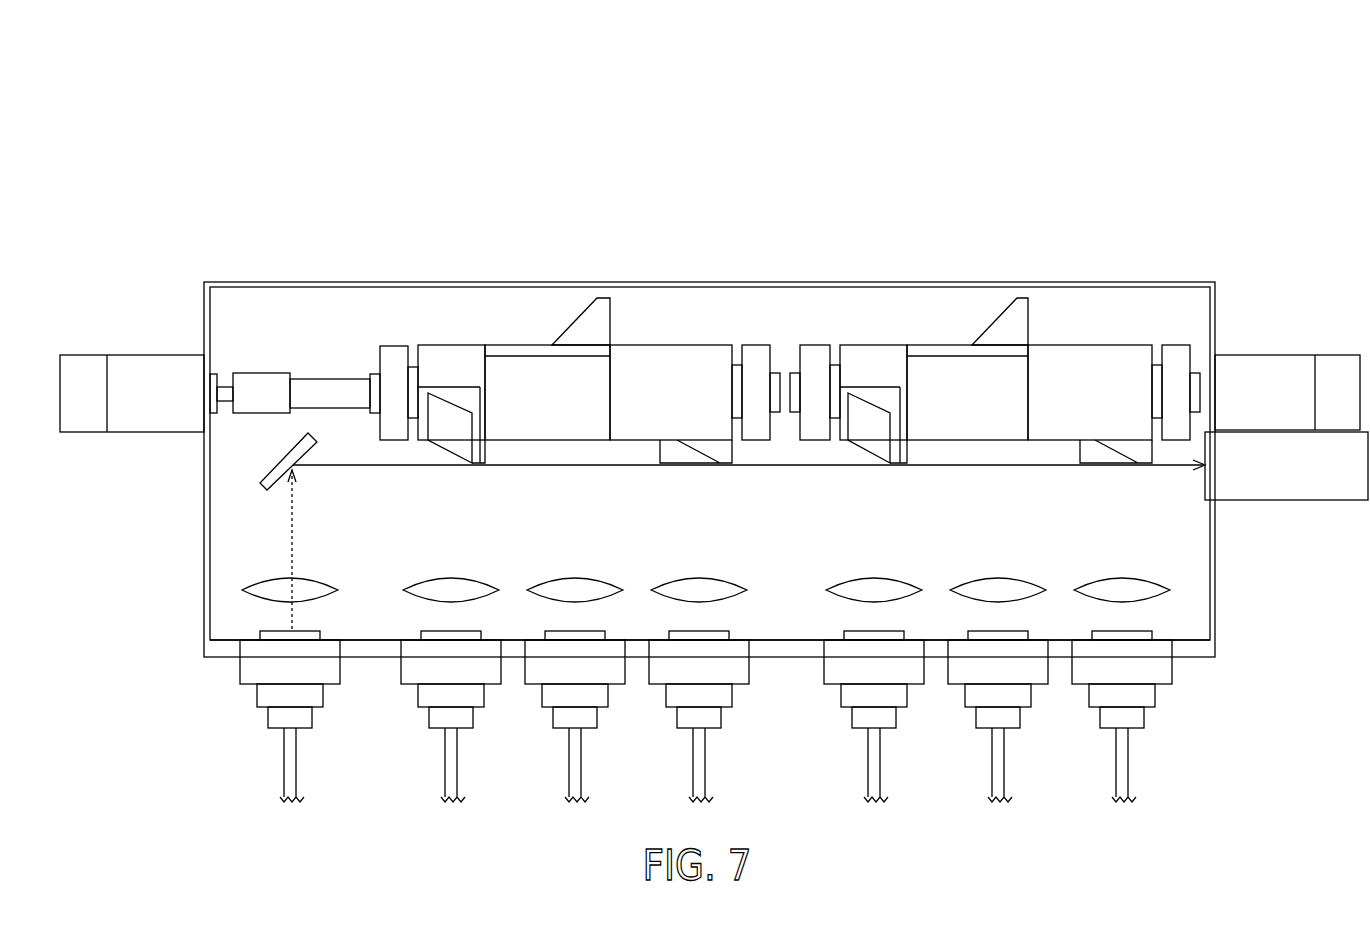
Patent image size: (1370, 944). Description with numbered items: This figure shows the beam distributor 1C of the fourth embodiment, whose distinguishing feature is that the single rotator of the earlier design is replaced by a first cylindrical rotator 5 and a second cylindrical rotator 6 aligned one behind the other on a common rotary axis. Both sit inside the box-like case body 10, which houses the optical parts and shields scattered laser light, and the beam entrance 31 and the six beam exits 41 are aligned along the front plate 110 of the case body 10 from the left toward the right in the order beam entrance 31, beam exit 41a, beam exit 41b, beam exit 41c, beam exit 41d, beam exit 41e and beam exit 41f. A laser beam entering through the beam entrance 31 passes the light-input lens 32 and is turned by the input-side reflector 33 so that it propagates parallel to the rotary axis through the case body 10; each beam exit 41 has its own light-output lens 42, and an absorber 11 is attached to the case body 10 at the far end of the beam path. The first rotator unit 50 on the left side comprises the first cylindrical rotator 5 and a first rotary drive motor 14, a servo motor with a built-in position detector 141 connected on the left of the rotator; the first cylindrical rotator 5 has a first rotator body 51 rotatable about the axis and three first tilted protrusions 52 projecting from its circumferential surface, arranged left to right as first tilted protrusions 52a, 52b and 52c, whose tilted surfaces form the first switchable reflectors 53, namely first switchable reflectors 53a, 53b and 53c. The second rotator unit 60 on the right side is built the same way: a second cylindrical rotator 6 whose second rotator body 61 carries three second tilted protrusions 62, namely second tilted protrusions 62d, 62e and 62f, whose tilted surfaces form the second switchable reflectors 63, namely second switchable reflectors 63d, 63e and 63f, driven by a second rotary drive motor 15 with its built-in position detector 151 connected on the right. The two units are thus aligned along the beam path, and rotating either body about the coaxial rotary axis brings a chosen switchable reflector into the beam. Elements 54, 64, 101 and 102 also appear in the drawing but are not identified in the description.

The beam distributor 1C is at (1275, 173).
The case body 10 is at (1217, 610).
The front plate 110 is at (1183, 658).
The absorber 11 is at (1295, 487).
The first rotary drive motor 14 is at (155, 368).
The position detector 141 is at (80, 368).
The second rotary drive motor 15 is at (1272, 368).
The position detector 151 is at (1330, 368).
The beam entrance 31 is at (262, 690).
The light-input lens 32 is at (270, 583).
The input-side reflector 33 is at (275, 465).
The beam exit 41 is at (764, 705).
The beam exit 41a is at (427, 705).
The beam exit 41b is at (551, 705).
The beam exit 41c is at (675, 705).
The beam exit 41d is at (850, 705).
The beam exit 41e is at (974, 705).
The beam exit 41f is at (1098, 705).
The light-output lens 42 is at (419, 592).
The first cylindrical rotator 5 is at (570, 314).
The first rotator unit 50 is at (549, 314).
The first rotator body 51 is at (521, 365).
The first tilted protrusions 52 is at (583, 333).
The first tilted protrusion 52a is at (480, 417).
The first tilted protrusion 52b is at (602, 298).
The first tilted protrusion 52c is at (722, 468).
The first switchable reflectors 53 is at (545, 309).
The first switchable reflector 53a is at (448, 415).
The first switchable reflector 53b is at (572, 325).
The first switchable reflector 53c is at (680, 450).
The first support plate 54 is at (395, 345).
The second cylindrical rotator 6 is at (994, 314).
The second rotator unit 60 is at (1019, 314).
The second rotator body 61 is at (943, 365).
The second tilted protrusions 62 is at (1004, 334).
The second tilted protrusion 62d is at (898, 418).
The second tilted protrusion 62e is at (1022, 298).
The second tilted protrusion 62f is at (1140, 468).
The second switchable reflectors 63 is at (968, 309).
The second switchable reflector 63d is at (868, 418).
The second switchable reflector 63e is at (990, 322).
The second switchable reflector 63f is at (1113, 448).
The second support plate 64 is at (814, 345).
The input optical fiber 101 is at (284, 775).
The output optical fiber 102 is at (445, 788).